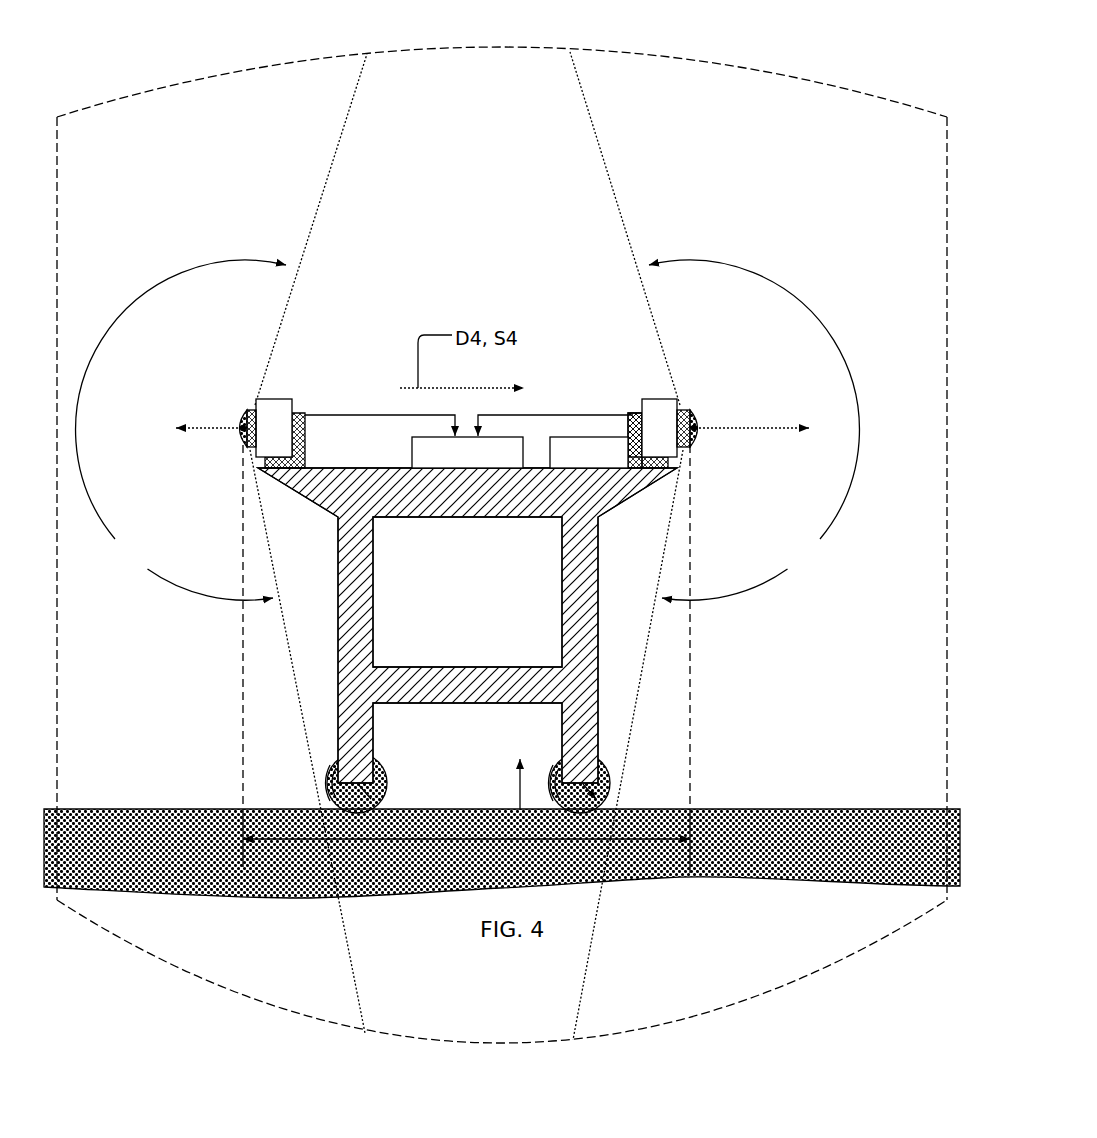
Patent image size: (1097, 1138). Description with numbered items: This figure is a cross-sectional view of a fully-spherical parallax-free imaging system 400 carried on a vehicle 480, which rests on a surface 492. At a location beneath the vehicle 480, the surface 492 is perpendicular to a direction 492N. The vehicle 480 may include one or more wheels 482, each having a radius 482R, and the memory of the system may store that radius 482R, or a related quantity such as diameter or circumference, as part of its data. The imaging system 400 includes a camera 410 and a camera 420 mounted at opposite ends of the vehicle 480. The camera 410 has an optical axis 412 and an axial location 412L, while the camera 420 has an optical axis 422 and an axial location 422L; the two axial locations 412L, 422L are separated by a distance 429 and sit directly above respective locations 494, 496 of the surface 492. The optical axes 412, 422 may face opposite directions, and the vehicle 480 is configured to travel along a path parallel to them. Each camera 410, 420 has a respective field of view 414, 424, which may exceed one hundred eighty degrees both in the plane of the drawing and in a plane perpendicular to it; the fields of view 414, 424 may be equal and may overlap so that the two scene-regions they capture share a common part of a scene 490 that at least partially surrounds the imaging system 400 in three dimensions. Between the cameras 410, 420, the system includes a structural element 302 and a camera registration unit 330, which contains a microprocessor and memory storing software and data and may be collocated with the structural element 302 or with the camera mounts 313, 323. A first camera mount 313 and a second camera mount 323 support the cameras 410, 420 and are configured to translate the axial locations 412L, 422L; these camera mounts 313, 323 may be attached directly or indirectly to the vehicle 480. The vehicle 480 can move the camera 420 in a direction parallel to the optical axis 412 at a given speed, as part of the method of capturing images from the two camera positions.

The scene 490 is at (722, 65).
The fully-spherical parallax-free imaging system 400 is at (200, 478).
The camera 420 is at (272, 381).
The optical axis 422 is at (247, 447).
The axial location 422L is at (241, 408).
The field of view 424 is at (181, 430).
The camera 410 is at (648, 384).
The optical axis 412 is at (760, 430).
The axial location 412L is at (694, 424).
The field of view 414 is at (754, 430).
The second camera mount 323 is at (303, 413).
The first camera mount 313 is at (634, 413).
The camera registration unit 330 is at (452, 464).
The structural element 302 is at (574, 464).
The vehicle 480 is at (518, 696).
The wheel 482 is at (378, 762).
The radius 482R is at (387, 780).
The surface 492 is at (806, 807).
The direction 492N is at (519, 773).
The location 494 is at (692, 807).
The location 496 is at (243, 807).
The distance 429 is at (466, 838).